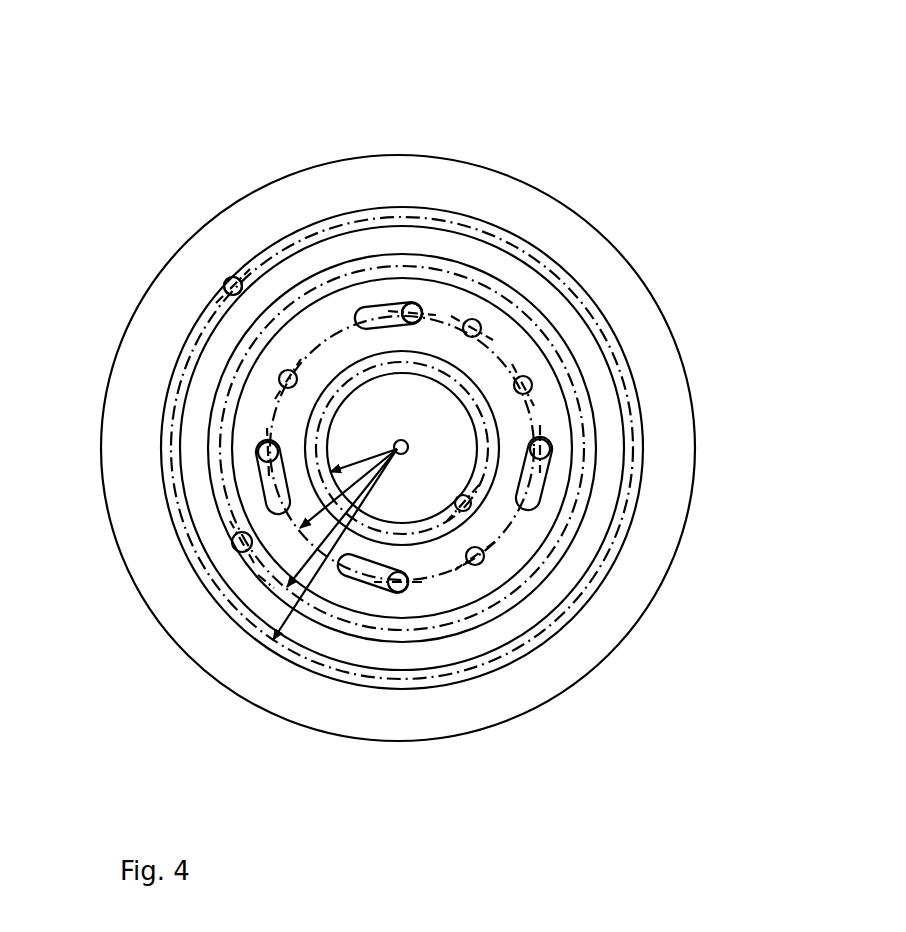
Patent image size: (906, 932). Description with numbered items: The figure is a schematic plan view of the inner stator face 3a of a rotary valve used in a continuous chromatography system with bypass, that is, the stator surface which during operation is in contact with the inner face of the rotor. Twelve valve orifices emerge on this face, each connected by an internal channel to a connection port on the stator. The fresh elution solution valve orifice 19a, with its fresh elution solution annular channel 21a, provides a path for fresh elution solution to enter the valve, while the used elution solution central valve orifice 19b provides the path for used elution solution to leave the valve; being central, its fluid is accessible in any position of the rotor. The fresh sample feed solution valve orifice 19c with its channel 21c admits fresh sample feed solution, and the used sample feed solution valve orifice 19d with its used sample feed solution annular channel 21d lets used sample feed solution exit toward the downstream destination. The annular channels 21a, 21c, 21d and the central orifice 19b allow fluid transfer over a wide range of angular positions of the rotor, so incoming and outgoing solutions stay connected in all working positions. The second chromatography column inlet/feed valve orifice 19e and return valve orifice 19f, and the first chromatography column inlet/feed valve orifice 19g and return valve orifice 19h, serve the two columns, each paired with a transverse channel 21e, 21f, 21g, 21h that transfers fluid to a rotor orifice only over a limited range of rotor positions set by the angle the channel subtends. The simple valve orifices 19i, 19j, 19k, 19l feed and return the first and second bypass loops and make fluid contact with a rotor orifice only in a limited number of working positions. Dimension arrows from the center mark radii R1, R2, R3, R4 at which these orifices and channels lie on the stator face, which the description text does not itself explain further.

The inner stator face 3a is at (458, 503).
The fresh elution solution valve orifice 19a is at (231, 280).
The used elution solution central valve orifice 19b is at (410, 303).
The fresh sample feed solution valve orifice 19c is at (472, 319).
The used sample feed solution valve orifice 19d is at (233, 540).
The second chromatography column inlet/feed valve orifice 19e is at (260, 450).
The second chromatography column return valve orifice 19f is at (405, 306).
The first chromatography column inlet/feed valve orifice 19g is at (550, 447).
The first chromatography column return valve orifice 19h is at (395, 590).
The first bypass loop feed valve orifice 19i is at (280, 378).
The first bypass loop return valve orifice 19j is at (406, 443).
The second bypass loop feed valve orifice 19k is at (530, 383).
The second bypass loop return valve orifice 19l is at (475, 566).
The fresh elution solution annular channel 21a is at (238, 280).
The fresh sample feed solution transverse channel 21c is at (480, 512).
The used sample feed solution annular channel 21d is at (267, 582).
The second chromatography column inlet/feed transverse channel 21e is at (277, 483).
The second chromatography column return transverse channel 21f is at (357, 313).
The first chromatography column inlet/feed transverse channel 21g is at (534, 488).
The first chromatography column return transverse channel 21h is at (372, 570).
The first radius R1 is at (470, 512).
The second radius R2 is at (487, 525).
The third radius R3 is at (590, 432).
The fourth radius R4 is at (627, 470).